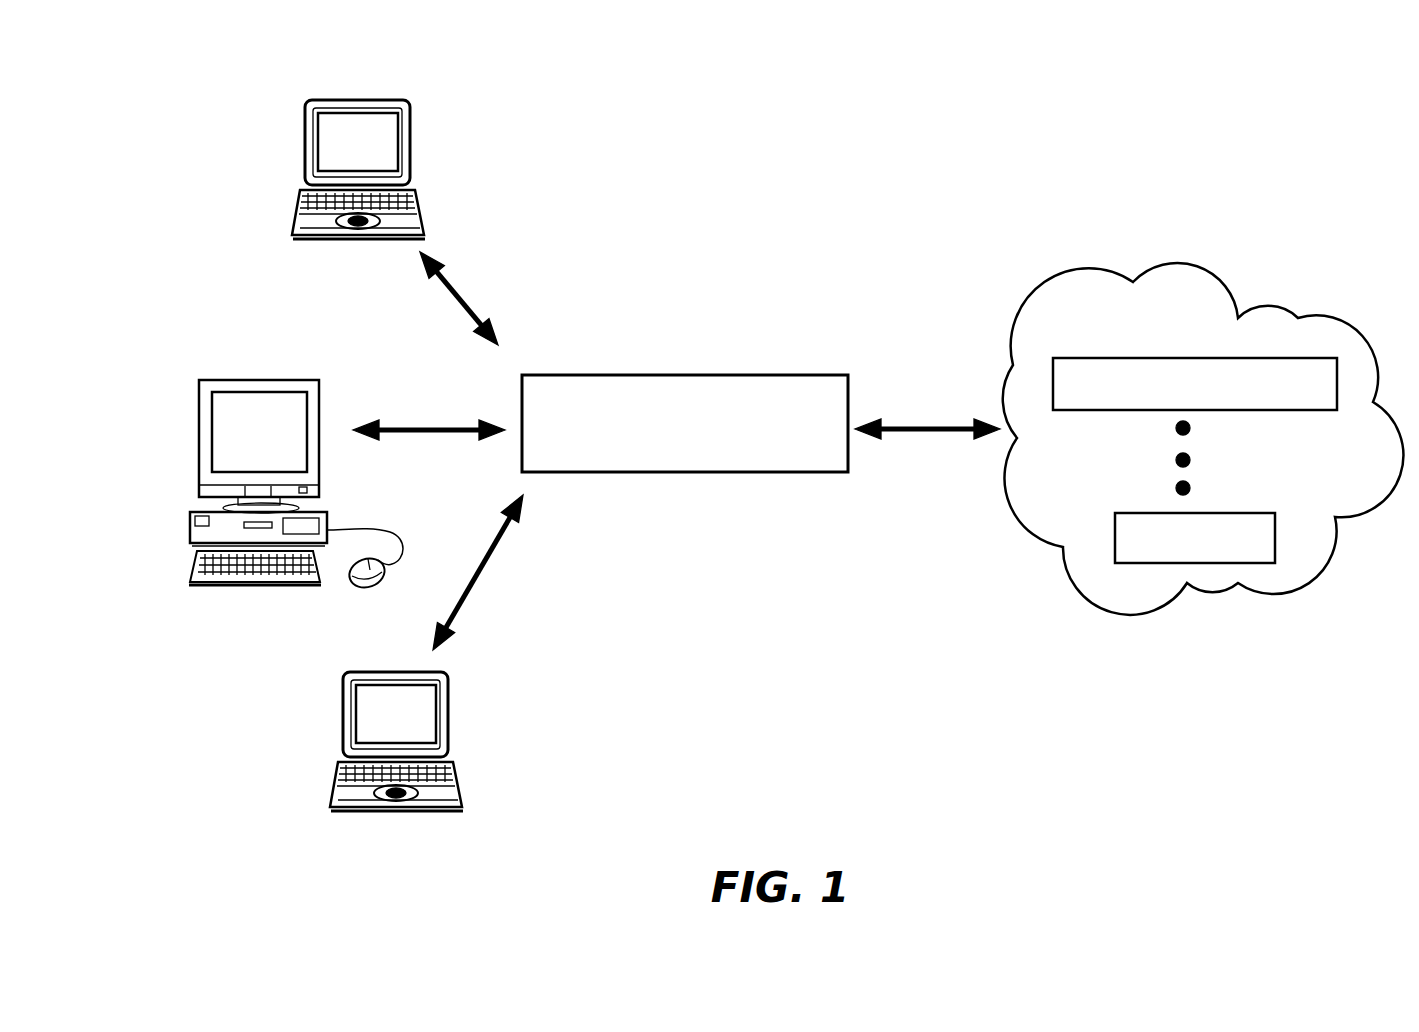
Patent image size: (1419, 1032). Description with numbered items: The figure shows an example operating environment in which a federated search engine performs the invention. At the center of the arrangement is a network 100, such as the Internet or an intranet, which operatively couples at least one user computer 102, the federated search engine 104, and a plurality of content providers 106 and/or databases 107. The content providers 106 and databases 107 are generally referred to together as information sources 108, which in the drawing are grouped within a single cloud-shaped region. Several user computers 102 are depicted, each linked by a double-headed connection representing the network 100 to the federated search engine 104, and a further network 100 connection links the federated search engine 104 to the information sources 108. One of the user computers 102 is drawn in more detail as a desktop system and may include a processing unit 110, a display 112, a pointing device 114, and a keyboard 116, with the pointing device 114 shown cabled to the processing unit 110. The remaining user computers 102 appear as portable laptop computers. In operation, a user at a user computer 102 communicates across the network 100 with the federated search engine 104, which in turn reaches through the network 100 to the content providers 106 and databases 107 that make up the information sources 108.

The network 100 is at (465, 300).
The user computer 102 is at (438, 99).
The federated search engine 104 is at (695, 373).
The content provider 106 is at (1228, 408).
The database 107 is at (1143, 515).
The information sources 108 is at (1265, 308).
The processing unit 110 is at (195, 530).
The display 112 is at (322, 408).
The pointing device 114 is at (371, 588).
The keyboard 116 is at (192, 560).